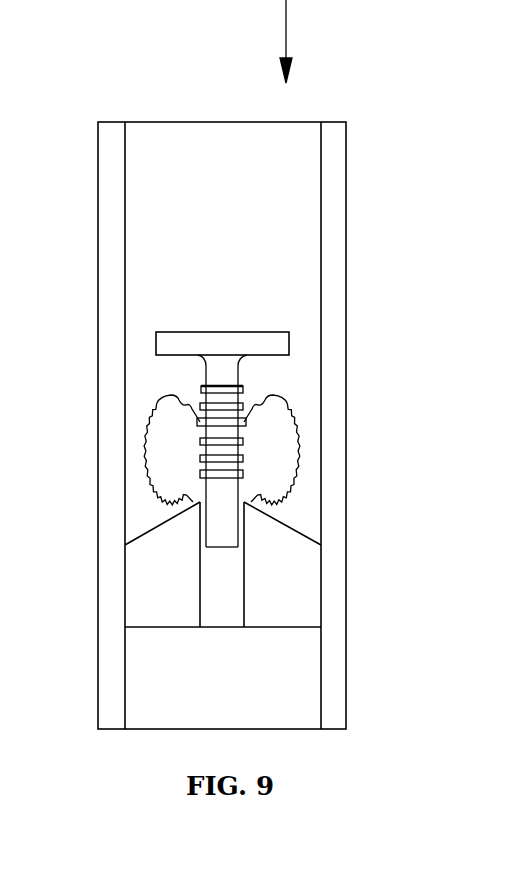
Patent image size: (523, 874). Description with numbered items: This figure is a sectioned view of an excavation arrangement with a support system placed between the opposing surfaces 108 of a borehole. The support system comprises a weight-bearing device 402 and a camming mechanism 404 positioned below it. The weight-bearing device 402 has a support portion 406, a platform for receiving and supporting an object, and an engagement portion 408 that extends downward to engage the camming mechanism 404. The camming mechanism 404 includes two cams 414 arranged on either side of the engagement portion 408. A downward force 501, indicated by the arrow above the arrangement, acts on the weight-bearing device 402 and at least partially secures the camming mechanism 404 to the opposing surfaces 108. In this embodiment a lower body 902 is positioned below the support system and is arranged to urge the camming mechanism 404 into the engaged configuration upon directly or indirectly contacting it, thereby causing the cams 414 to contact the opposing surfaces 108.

The opposing surfaces 108 is at (125, 653).
The weight-bearing device 402 is at (219, 406).
The camming mechanism 404 is at (263, 660).
The support portion 406 is at (176, 332).
The engagement portion 408 is at (157, 374).
The cam 414 is at (158, 428).
The downward force 501 is at (287, 30).
The lower body 902 is at (143, 568).